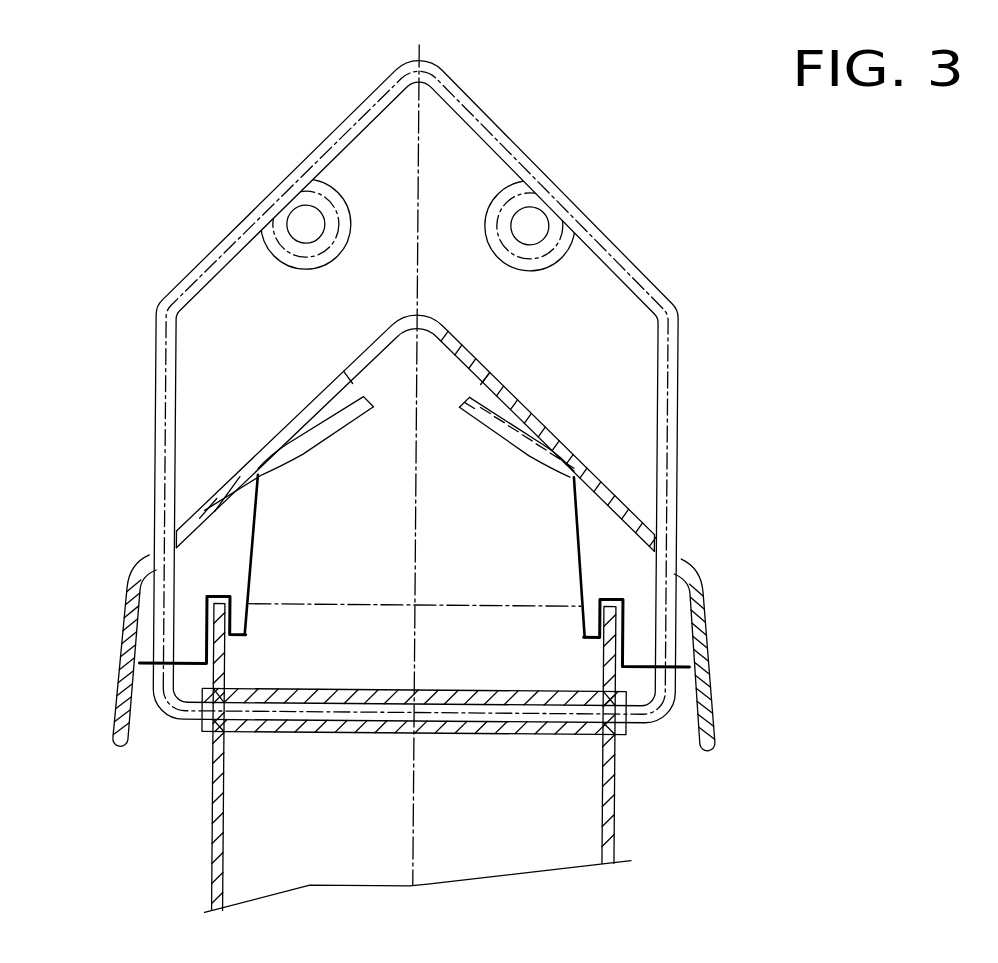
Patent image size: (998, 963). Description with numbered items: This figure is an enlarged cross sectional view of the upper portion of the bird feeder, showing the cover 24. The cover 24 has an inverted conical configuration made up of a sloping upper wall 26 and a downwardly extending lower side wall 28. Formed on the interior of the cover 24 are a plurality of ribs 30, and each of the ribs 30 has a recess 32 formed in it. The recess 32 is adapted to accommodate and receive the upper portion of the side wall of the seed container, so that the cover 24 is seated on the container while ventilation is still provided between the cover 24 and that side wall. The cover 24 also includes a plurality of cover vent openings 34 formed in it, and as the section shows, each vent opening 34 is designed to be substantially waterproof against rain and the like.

The cover 24 is at (209, 438).
The sloping upper wall 26 is at (615, 507).
The lower side wall 28 is at (703, 692).
The ribs 30 is at (256, 553).
The recess 32 is at (234, 648).
The cover vent openings 34 is at (303, 400).